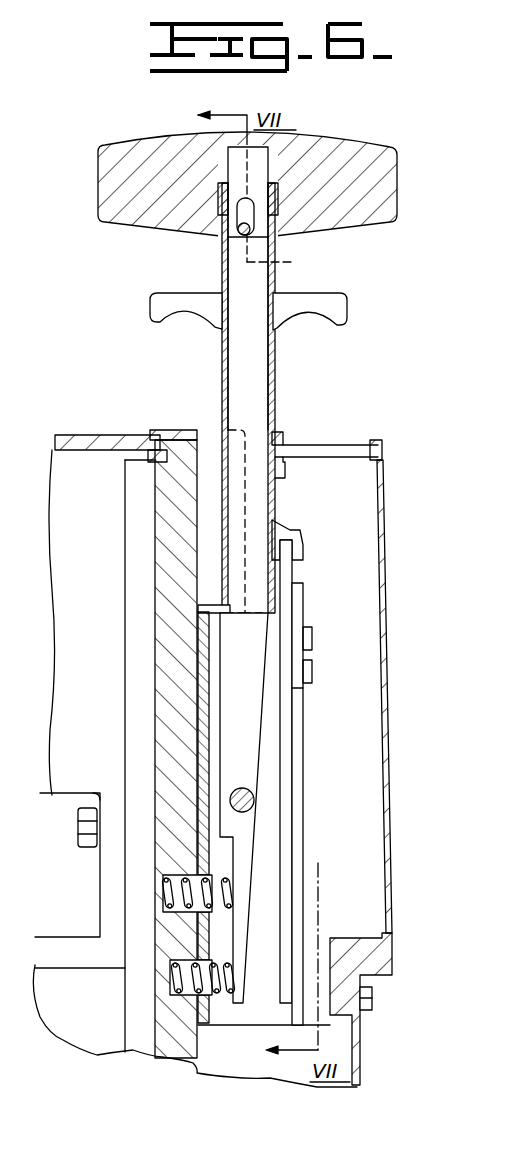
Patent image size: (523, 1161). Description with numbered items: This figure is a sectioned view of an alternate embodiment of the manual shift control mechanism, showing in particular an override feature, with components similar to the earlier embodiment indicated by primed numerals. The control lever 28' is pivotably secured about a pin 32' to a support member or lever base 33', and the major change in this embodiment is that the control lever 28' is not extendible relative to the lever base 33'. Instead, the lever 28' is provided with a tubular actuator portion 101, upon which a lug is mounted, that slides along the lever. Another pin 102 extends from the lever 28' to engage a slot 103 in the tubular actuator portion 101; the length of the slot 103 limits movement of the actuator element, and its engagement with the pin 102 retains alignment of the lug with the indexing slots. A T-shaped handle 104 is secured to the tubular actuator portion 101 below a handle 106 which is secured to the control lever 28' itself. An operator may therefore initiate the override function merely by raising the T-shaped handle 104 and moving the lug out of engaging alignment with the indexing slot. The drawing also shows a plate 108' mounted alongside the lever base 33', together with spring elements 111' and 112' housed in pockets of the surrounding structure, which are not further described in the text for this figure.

The handle 106 is at (392, 173).
The control lever 28' is at (302, 179).
The slot 103 is at (235, 225).
The pin 102 is at (255, 230).
The tubular actuator portion 101 is at (276, 377).
The T-shaped handle 104 is at (348, 300).
The plate 108' is at (379, 766).
The pin 32' is at (289, 782).
The lever base 33' is at (234, 871).
The springs 111' is at (139, 893).
The springs 112' is at (147, 990).